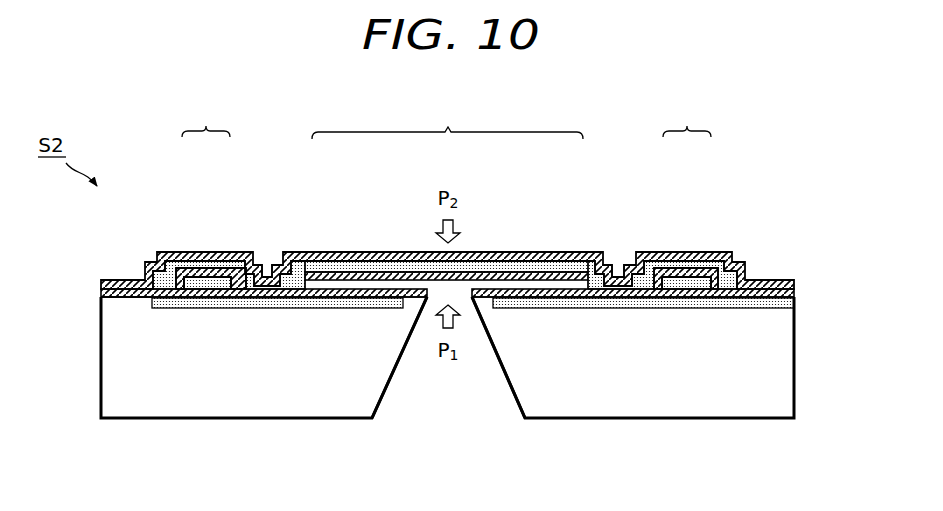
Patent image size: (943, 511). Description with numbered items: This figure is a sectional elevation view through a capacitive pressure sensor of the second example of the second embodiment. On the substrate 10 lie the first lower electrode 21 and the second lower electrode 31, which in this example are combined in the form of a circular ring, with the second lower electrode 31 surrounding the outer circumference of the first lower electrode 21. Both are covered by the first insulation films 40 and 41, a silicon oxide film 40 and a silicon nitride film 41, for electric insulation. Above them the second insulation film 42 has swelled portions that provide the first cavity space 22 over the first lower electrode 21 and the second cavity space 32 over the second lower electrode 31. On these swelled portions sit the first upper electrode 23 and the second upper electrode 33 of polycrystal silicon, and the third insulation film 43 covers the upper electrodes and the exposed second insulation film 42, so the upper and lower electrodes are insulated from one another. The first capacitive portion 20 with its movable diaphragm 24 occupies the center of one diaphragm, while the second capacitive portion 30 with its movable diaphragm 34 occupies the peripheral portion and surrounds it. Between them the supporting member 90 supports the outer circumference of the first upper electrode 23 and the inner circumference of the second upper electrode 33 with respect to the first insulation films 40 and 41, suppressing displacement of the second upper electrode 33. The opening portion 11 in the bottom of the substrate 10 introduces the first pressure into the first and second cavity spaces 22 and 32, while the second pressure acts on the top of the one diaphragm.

The substrate 10 is at (780, 389).
The opening portion 11 is at (438, 392).
The first capacitive portion 20 is at (447, 119).
The first lower electrode 21 is at (455, 321).
The first cavity space 22 is at (557, 284).
The first upper electrode 23 is at (515, 252).
The movable diaphragm 24 is at (564, 247).
The second capacitive portion 30 is at (446, 118).
The second lower electrode 31 is at (147, 303).
The second cavity space 32 is at (205, 284).
The second upper electrode 33 is at (185, 252).
The movable diaphragm 34 is at (211, 246).
The first insulation film 40 is at (514, 302).
The first insulation film 41 is at (794, 300).
The second insulation film 42 is at (794, 291).
The third insulation film 43 is at (794, 282).
The supporting member 90 is at (269, 264).